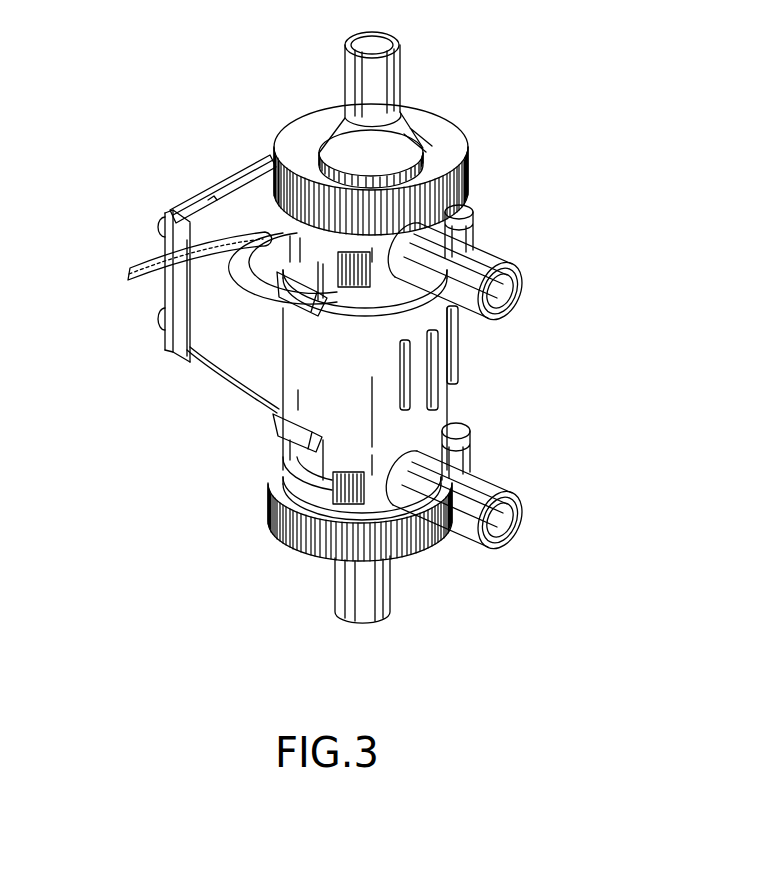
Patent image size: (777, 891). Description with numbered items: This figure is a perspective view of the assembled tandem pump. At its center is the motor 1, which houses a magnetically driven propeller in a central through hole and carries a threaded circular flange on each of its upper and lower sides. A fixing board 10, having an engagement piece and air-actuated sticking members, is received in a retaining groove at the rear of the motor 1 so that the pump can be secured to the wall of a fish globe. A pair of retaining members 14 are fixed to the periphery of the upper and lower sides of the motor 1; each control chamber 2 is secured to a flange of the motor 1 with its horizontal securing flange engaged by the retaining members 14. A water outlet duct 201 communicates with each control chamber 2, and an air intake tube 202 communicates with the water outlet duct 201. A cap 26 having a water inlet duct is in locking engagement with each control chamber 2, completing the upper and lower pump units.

The motor 1 is at (233, 357).
The control chamber 2 is at (292, 232).
The fixing board 10 is at (190, 203).
The retaining member 14 is at (285, 437).
The cap 26 is at (432, 130).
The water outlet duct 201 is at (497, 262).
The air intake tube 202 is at (470, 218).